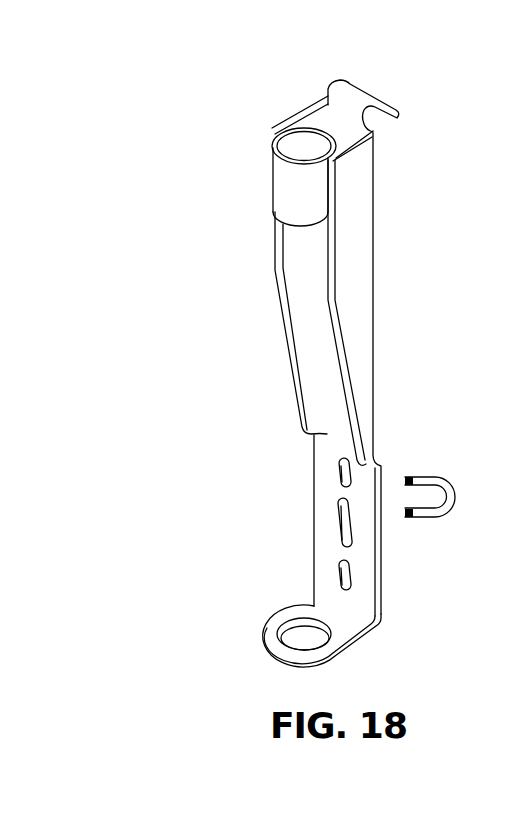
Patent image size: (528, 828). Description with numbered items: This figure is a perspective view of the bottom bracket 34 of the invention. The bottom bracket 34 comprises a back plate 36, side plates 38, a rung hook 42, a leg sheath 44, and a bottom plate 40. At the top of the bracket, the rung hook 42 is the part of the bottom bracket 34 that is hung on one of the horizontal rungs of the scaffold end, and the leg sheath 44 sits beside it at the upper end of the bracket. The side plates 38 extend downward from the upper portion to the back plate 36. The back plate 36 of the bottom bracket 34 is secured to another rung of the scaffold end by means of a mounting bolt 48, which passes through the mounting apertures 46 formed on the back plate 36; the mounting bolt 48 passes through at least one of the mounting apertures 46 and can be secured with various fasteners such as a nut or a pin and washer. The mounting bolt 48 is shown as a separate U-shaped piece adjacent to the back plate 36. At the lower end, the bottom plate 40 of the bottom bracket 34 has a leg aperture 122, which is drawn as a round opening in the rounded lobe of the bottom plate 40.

The bottom bracket 34 is at (424, 306).
The back plate 36 is at (322, 577).
The side plates 38 is at (297, 272).
The bottom plate 40 is at (310, 613).
The rung hook 42 is at (355, 98).
The leg sheath 44 is at (287, 177).
The mounting apertures 46 is at (342, 565).
The mounting bolt 48 is at (427, 480).
The leg aperture 122 is at (303, 642).